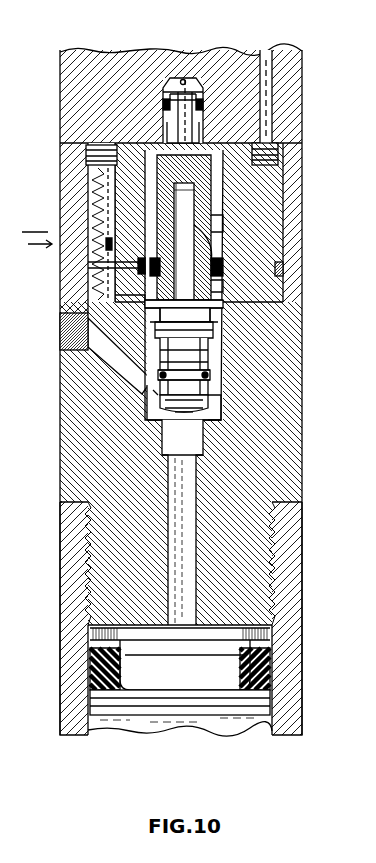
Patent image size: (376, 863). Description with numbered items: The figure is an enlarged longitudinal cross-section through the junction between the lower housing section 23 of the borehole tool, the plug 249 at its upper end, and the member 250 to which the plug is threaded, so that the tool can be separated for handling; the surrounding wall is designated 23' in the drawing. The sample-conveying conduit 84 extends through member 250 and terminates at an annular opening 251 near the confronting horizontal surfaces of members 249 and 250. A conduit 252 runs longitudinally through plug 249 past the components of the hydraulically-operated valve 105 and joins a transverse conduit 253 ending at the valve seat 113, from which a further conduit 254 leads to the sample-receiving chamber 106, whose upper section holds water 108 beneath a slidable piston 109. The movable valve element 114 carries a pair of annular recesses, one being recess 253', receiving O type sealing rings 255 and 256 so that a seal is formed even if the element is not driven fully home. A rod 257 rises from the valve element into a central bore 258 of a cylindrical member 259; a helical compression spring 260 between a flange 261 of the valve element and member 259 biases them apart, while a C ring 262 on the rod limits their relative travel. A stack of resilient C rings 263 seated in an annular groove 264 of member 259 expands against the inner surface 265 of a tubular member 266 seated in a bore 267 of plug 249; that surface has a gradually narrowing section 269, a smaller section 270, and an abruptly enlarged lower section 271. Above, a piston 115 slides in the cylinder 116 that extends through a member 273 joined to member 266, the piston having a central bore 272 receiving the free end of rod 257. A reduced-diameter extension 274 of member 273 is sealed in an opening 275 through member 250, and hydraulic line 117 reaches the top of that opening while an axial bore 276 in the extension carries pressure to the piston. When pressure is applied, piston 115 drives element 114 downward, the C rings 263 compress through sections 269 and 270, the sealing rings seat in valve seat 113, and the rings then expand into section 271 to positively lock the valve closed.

The hydraulic line 117 is at (184, 78).
The sample-conveying conduit 84 is at (268, 100).
The member 250 is at (302, 135).
The annular opening 251 is at (86, 153).
The opening 275 is at (172, 92).
The extension 274 is at (165, 118).
The axial bore 276 is at (178, 140).
The cylinder 116 is at (222, 180).
The conduit 252 is at (96, 205).
The C ring 262 is at (140, 245).
The central bore 258 is at (150, 255).
The hydraulically-operated valve 105 is at (37, 240).
The rod 257 is at (140, 265).
The C rings 263 is at (138, 270).
The annular groove 264 is at (145, 300).
The helical compression spring 260 is at (88, 320).
The transverse conduit 253 is at (55, 344).
The annular recess 253' is at (216, 406).
The member 273 is at (198, 190).
The central bore 272 is at (210, 228).
The bore 267 is at (214, 250).
The piston 115 is at (215, 250).
The tubular member 266 is at (224, 266).
The inner surface 265 is at (222, 285).
The section of gradually decreasing diameter 269 is at (224, 300).
The cylindrical member 259 is at (212, 315).
The section of smaller diameter 270 is at (215, 328).
The flange 261 is at (210, 352).
The valve element 114 is at (212, 375).
The lower section 271 is at (210, 392).
The plug 249 is at (302, 372).
The O type sealing ring 255 is at (155, 380).
The O type sealing ring 256 is at (178, 396).
The conduit 254 is at (190, 398).
The valve seat 113 is at (200, 437).
The inner mandrel 23' is at (146, 524).
The lower housing section 23 is at (161, 618).
The sample-receiving chamber 106 is at (92, 672).
The piston 109 is at (92, 710).
The water 108 is at (206, 732).